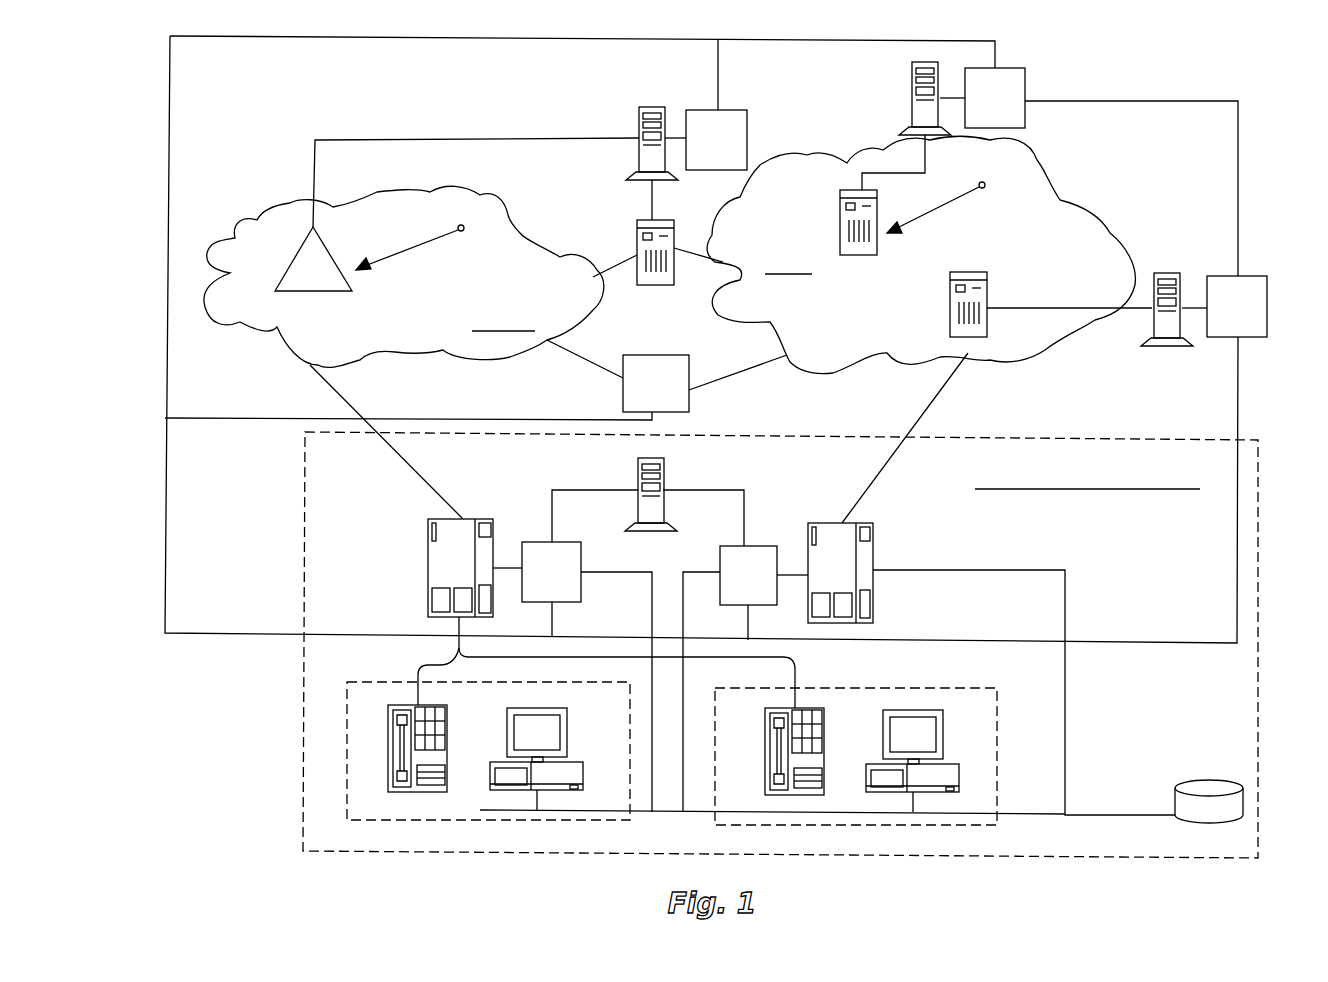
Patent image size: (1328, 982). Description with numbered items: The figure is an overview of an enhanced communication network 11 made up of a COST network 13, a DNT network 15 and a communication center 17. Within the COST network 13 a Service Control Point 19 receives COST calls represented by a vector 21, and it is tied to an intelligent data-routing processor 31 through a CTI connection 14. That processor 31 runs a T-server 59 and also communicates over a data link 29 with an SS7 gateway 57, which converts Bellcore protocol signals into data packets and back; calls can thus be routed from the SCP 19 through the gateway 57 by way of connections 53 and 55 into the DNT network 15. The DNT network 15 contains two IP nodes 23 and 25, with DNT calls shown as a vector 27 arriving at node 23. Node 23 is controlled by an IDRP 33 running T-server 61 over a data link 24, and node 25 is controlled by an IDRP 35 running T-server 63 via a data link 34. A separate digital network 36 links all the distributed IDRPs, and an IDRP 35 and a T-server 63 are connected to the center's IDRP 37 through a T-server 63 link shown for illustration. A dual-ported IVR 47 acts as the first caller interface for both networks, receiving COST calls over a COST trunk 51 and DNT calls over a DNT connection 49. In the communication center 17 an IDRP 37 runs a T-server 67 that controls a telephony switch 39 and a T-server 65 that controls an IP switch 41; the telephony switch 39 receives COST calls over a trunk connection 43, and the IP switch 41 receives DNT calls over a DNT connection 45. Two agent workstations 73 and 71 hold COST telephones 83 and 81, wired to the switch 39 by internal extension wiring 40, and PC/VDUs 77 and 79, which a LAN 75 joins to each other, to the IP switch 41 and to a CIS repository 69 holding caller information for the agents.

The communication network 11 is at (1100, 86).
The COST network 13 is at (235, 214).
The CTI connection 14 is at (390, 138).
The DNT network 15 is at (1095, 221).
The communication center 17 is at (290, 521).
The Service Control Point (SCP) 19 is at (338, 240).
The vector representing COST calls 21 is at (420, 245).
The IP node 23 is at (840, 228).
The data link 24 is at (895, 157).
The IP node 25 is at (950, 322).
The vector representing DNT calls 27 is at (930, 210).
The data link 29 is at (651, 212).
The intelligent data-routing processor (IDRP) 31 is at (639, 130).
The intelligent data-routing processor (IDRP) 33 is at (912, 108).
The data link 34 is at (1085, 310).
The intelligent data-routing processor (IDRP) 35 is at (1165, 347).
The digital network 36 is at (520, 41).
The intelligent data-routing processor (IDRP) 37 is at (638, 485).
The telephony switch 39 is at (428, 575).
The internal extension wiring 40 is at (459, 626).
The IP switch 41 is at (873, 548).
The trunk connection 43 is at (385, 447).
The DNT connection 45 is at (897, 455).
The dual-ported IVR 47 is at (662, 355).
The DNT connection 49 is at (727, 382).
The COST trunk 51 is at (618, 383).
The connection 53 is at (608, 250).
The connection 55 is at (692, 258).
The SS7 gateway 57 is at (677, 243).
The T-server (T-S) 59 is at (747, 136).
The T-server (T-S) 61 is at (1025, 87).
The T-server (T-S) 63 is at (1267, 310).
The T-server (T-S) 65 is at (762, 546).
The T-server (T-S) 67 is at (550, 542).
The customer information system (CIS) repository 69 is at (1208, 780).
The agent workstation 71 is at (1006, 737).
The agent workstation 73 is at (344, 734).
The local-area network (LAN) 75 is at (665, 812).
The PC/VDU 77 is at (507, 738).
The PC/VDU 79 is at (883, 742).
The COST telephone 81 is at (765, 738).
The COST telephone 83 is at (388, 745).